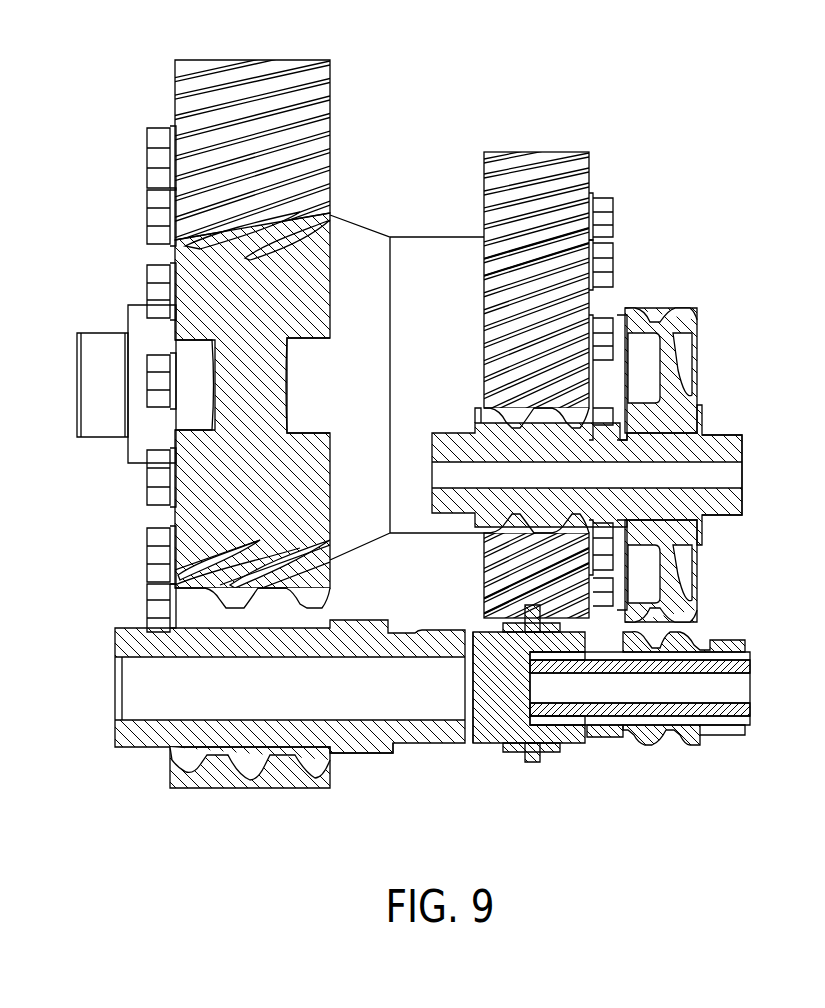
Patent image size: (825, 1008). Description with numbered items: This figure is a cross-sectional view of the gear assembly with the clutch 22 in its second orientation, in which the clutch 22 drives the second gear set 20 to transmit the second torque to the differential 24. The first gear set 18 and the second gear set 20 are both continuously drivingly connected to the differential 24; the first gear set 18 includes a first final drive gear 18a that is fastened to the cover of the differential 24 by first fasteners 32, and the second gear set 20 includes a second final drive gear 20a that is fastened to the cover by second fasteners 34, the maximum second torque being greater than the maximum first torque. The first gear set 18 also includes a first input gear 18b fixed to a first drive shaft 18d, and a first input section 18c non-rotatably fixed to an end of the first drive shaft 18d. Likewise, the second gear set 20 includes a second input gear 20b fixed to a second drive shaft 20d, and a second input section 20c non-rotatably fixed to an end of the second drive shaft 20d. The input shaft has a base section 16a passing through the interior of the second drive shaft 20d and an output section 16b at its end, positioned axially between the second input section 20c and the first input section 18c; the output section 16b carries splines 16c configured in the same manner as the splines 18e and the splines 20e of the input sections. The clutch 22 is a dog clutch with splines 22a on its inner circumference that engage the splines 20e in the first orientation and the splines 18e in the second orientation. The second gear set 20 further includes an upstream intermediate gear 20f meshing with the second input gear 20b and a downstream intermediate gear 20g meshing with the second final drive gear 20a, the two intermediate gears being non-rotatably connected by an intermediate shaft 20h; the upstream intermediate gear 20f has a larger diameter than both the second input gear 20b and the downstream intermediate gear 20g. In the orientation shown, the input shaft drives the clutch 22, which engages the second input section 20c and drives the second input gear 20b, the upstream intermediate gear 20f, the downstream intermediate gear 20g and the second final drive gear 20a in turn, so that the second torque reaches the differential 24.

The first gear set 18 is at (130, 793).
The first final drive gear 18a is at (304, 75).
The first input gear 18b is at (240, 772).
The first input section 18c is at (388, 768).
The first drive shaft 18d is at (328, 775).
The splines 18e is at (435, 770).
The first fasteners 32 is at (160, 219).
The differential 24 is at (420, 206).
The second gear set 20 is at (630, 130).
The second final drive gear 20a is at (554, 166).
The second input gear 20b is at (698, 742).
The second input section 20c is at (668, 742).
The second drive shaft 20d is at (732, 652).
The splines 20e is at (630, 745).
The upstream intermediate gear 20f is at (660, 320).
The downstream intermediate gear 20g is at (500, 518).
The intermediate shaft 20h is at (728, 448).
The second fasteners 34 is at (606, 222).
The base section 16a is at (720, 720).
The output section 16b is at (535, 748).
The splines 16c is at (492, 745).
The clutch 22 is at (580, 752).
The splines 22a is at (552, 752).